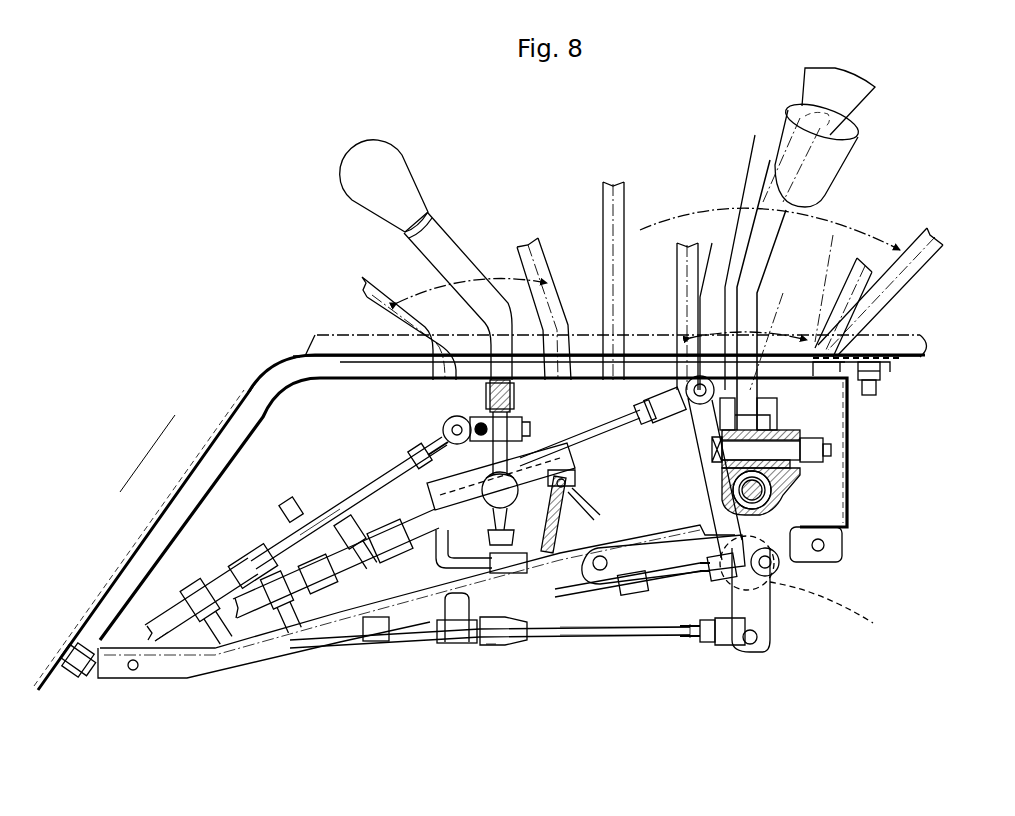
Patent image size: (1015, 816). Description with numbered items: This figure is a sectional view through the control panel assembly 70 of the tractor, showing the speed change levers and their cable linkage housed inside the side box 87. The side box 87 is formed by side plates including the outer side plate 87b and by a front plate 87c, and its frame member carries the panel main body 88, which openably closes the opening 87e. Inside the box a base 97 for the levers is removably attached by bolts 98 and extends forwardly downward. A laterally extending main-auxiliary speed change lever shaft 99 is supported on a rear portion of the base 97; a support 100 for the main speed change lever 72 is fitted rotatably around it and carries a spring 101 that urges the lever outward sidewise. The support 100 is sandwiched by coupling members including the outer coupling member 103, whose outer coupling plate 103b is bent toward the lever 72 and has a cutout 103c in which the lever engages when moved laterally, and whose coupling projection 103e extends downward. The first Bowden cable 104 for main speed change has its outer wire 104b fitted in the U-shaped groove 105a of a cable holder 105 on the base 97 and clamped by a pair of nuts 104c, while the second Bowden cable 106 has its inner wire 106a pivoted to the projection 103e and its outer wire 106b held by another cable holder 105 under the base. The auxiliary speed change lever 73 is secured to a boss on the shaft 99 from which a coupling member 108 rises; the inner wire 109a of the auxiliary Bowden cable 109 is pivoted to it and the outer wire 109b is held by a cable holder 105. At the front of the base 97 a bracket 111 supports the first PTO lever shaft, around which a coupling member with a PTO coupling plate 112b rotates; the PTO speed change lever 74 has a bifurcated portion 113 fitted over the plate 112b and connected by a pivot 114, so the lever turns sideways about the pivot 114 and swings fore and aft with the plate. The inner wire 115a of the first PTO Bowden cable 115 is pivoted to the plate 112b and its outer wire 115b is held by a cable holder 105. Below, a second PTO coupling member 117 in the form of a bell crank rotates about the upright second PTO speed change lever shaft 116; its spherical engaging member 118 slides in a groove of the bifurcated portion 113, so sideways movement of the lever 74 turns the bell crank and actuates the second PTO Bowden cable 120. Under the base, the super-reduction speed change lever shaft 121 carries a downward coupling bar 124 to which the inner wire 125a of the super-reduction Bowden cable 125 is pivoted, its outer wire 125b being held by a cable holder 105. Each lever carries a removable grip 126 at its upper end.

The control panel assembly 70 is at (582, 296).
The main speed change lever 72 is at (713, 243).
The auxiliary speed change lever 73 is at (650, 193).
The PTO speed change lever 74 is at (450, 250).
The side box 87 is at (240, 400).
The outer side plate 87b is at (305, 398).
The front plate 87c is at (168, 508).
The opening 87e is at (828, 342).
The panel main body 88 is at (900, 342).
The base 97 is at (222, 672).
The bolts 98 is at (133, 670).
The main-auxiliary speed change lever shaft 99 is at (775, 505).
The support 100 is at (795, 470).
The spring 101 is at (833, 450).
The outer coupling member 103 is at (800, 410).
The outer coupling plate 103b is at (768, 412).
The cutout 103c is at (758, 400).
The coupling projection 103e is at (779, 568).
The first Bowden cable 104 is at (410, 636).
The outer wire 104b is at (372, 640).
The nuts 104c is at (428, 580).
The cable holder 105 is at (308, 530).
The U-shaped groove 105a is at (488, 488).
The second Bowden cable 106 is at (578, 640).
The inner wire 106a is at (645, 590).
The outer wire 106b is at (548, 642).
The coupling member 108 is at (677, 360).
The Bowden cable 109 is at (611, 446).
The inner wire 109a is at (712, 450).
The outer wire 109b is at (395, 505).
The bracket 111 is at (592, 394).
The PTO coupling plate 112b is at (456, 420).
The bifurcated portion 113 is at (507, 378).
The pivot 114 is at (586, 378).
The first Bowden cable 115 is at (252, 548).
The inner wire 115a is at (335, 468).
The outer wire 115b is at (140, 548).
The second PTO speed change lever shaft 116 is at (585, 500).
The second PTO coupling member 117 is at (577, 602).
The spherical engaging member 118 is at (533, 472).
The second Bowden cable 120 is at (317, 643).
The speed change lever shaft 121 is at (815, 588).
The coupling bar 124 is at (765, 618).
The Bowden cable 125 is at (659, 641).
The inner wire 125a is at (676, 640).
The outer wire 125b is at (490, 648).
The grip 126 is at (410, 172).